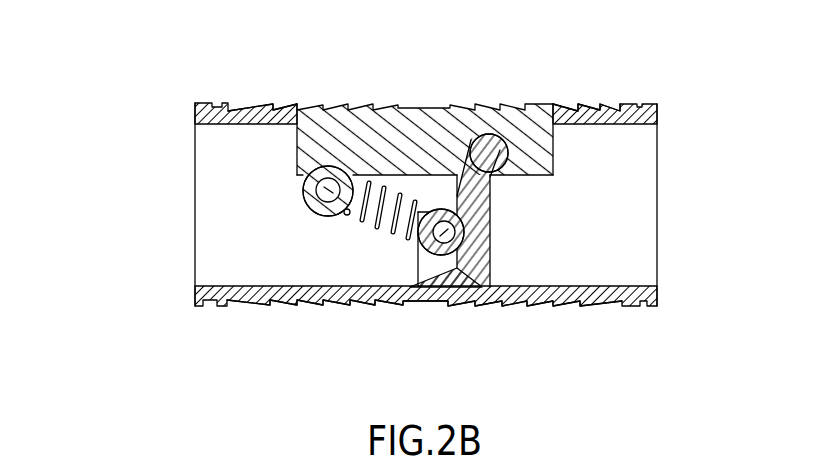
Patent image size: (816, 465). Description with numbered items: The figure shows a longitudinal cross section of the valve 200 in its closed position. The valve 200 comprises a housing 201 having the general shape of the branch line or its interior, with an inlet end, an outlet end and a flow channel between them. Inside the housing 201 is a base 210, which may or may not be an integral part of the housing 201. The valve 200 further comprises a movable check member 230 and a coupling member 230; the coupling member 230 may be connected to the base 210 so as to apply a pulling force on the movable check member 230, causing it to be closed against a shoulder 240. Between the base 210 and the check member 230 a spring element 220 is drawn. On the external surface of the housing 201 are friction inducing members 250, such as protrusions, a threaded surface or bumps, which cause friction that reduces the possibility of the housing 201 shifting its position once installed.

The valve 200 is at (150, 122).
The housing 201 is at (617, 167).
The base 210 is at (431, 209).
The spring 220 is at (376, 210).
The movable check member 230 is at (477, 238).
The shoulder 240 is at (441, 288).
The friction inducing members 250 is at (337, 101).